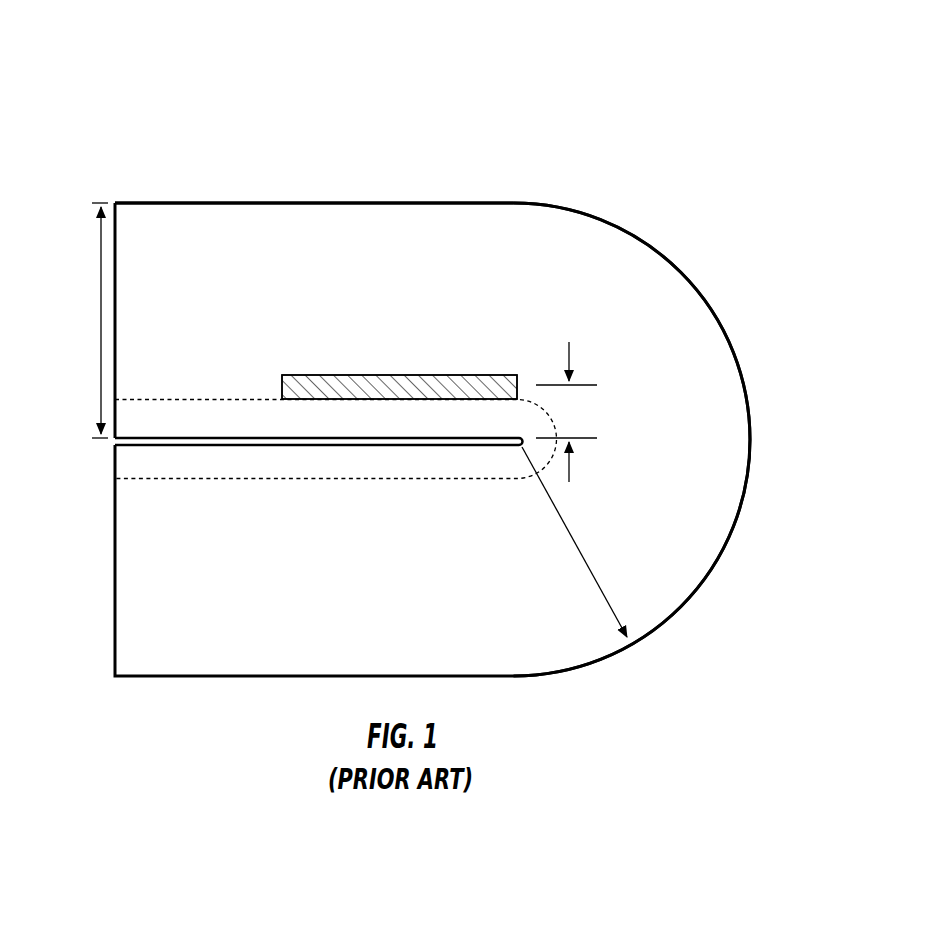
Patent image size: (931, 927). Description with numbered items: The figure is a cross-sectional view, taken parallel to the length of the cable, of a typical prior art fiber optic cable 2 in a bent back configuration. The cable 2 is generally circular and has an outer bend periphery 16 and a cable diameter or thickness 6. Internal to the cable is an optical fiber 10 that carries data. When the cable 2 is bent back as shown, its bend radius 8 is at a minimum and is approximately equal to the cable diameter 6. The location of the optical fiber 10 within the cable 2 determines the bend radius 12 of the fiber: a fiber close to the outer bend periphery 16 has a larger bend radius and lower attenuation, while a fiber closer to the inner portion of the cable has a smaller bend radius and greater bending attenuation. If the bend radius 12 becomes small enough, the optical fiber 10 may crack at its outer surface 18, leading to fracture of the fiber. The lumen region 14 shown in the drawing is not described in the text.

The fiber optic cable 2 is at (478, 188).
The cable diameter 6 is at (100, 348).
The bend radius 8 is at (598, 583).
The optical fiber 10 is at (472, 387).
The bend radius of the optical fiber 12 is at (584, 410).
The lumen slot 14 is at (371, 519).
The outer bend periphery 16 is at (287, 203).
The outer surface of the optical fiber 18 is at (405, 375).